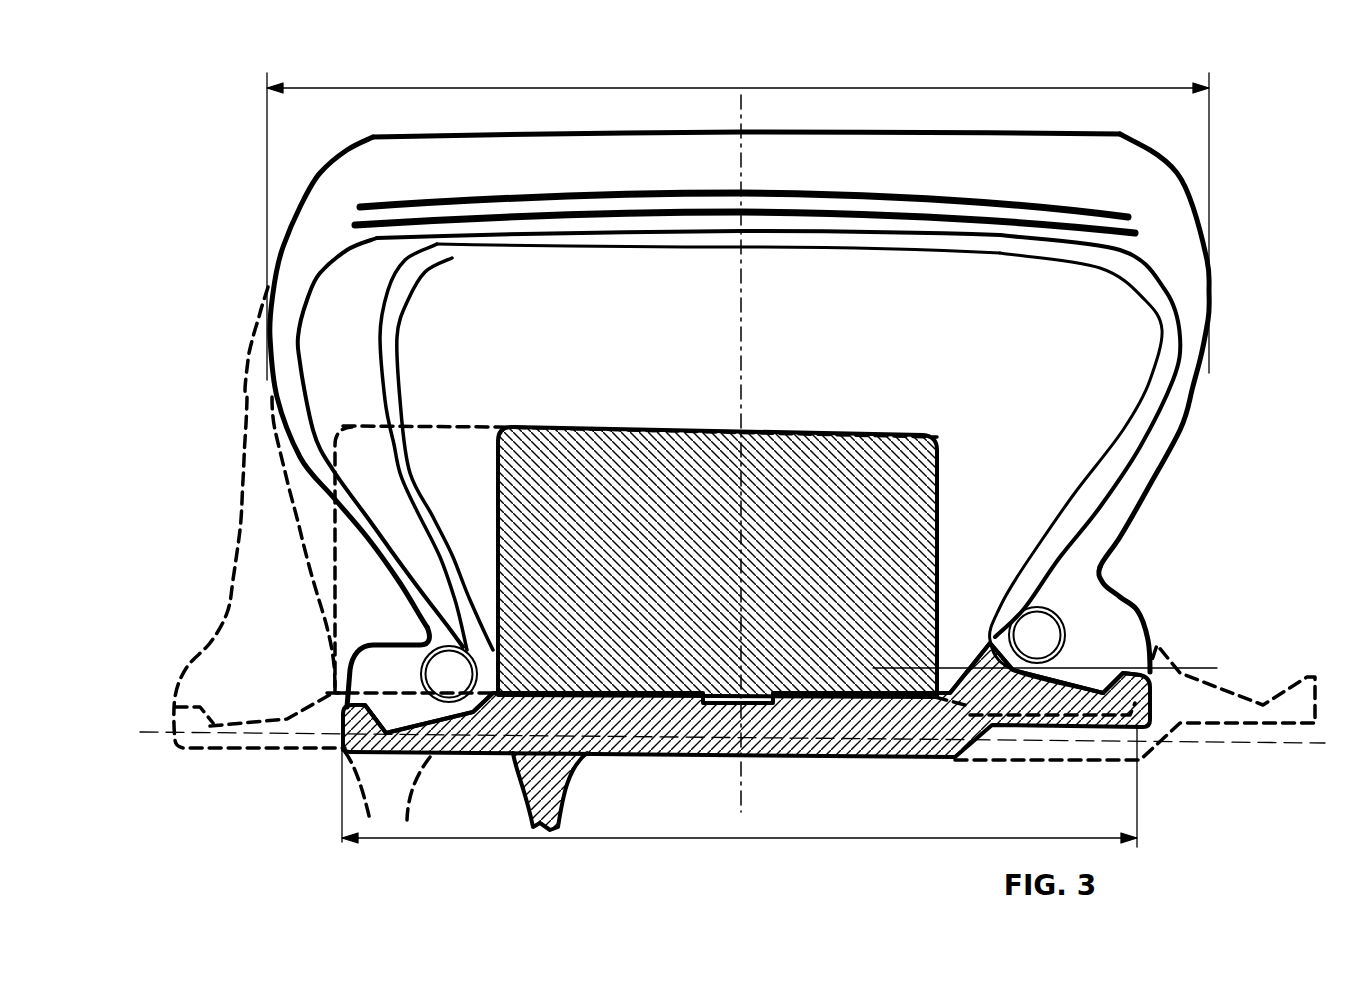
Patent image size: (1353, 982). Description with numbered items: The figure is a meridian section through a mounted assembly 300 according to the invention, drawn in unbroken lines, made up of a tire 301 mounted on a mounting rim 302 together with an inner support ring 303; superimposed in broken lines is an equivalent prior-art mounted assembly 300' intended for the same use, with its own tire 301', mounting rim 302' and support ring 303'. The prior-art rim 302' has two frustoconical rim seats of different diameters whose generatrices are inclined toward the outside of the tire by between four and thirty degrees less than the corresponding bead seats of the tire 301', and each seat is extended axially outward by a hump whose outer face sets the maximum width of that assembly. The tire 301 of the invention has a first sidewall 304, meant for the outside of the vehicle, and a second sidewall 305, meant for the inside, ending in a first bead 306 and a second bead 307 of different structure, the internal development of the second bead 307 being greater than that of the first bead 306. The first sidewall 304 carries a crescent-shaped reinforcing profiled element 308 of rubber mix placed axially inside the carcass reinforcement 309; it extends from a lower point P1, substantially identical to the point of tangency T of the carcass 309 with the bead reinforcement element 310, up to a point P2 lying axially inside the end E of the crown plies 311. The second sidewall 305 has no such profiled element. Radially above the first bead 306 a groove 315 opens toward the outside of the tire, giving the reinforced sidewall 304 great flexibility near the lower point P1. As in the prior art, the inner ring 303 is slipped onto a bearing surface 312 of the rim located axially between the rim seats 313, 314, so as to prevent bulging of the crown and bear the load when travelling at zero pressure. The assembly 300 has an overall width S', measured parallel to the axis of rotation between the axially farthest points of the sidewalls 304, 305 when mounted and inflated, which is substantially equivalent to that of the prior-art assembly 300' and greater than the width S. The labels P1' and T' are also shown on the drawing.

The mounted assembly 300 is at (848, 182).
The tire 301 is at (1213, 350).
The mounting rim 302 is at (746, 736).
The inner support ring 303 is at (747, 528).
The first sidewall 304 is at (300, 422).
The second sidewall 305 is at (1170, 422).
The first bead 306 is at (410, 707).
The second bead 307 is at (1102, 640).
The reinforcing profiled element 308 is at (345, 298).
The carcass reinforcement 309 is at (307, 290).
The bead reinforcement element 310 is at (445, 683).
The crown plies 311 is at (736, 217).
The bearing surface 312 is at (845, 700).
The rim seat 313 is at (393, 750).
The rim seat 314 is at (1063, 690).
The groove 315 is at (417, 634).
The prior art mounted assembly 300' is at (225, 517).
The prior art tire 301' is at (220, 545).
The prior art mounting rim 302' is at (745, 732).
The prior art support ring 303' is at (558, 565).
The end of the crown plies E is at (357, 221).
The width S is at (739, 798).
The overall width S' is at (738, 214).
The lower point of the profiled element P1 is at (480, 604).
The sidewall point P1' is at (262, 366).
The upper point of the profiled element P2 is at (450, 257).
The point of tangency T is at (512, 638).
The tangent T' is at (367, 394).